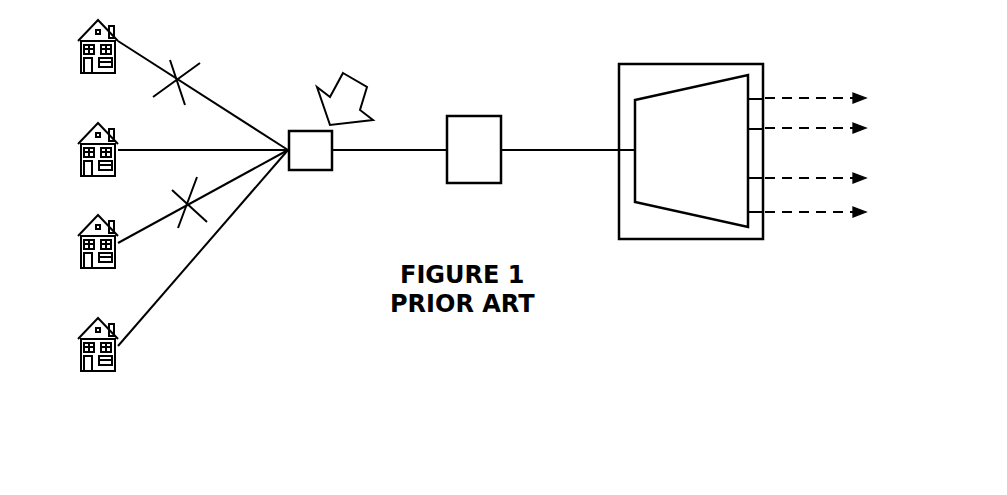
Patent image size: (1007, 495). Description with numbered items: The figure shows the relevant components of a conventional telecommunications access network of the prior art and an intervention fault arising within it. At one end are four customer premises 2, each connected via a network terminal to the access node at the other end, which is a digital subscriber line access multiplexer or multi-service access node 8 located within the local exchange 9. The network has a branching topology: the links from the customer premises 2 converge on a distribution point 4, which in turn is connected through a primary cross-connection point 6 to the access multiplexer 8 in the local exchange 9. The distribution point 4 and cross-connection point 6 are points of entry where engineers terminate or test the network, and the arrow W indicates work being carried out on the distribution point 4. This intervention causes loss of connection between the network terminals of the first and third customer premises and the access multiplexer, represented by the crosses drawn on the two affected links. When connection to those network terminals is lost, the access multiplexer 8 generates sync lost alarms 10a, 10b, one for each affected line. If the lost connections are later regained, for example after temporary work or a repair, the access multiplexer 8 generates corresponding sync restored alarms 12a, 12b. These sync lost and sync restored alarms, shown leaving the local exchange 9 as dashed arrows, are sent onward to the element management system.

The customer premises 2 is at (55, 364).
The distribution point 4 is at (310, 150).
The arrow indicating intervention work W is at (345, 99).
The primary cross-connection point 6 is at (474, 149).
The digital subscriber line access multiplexer 8 is at (691, 151).
The local exchange 9 is at (703, 243).
The sync lost alarm 10a is at (815, 89).
The sync lost alarm 10b is at (815, 117).
The sync restored alarm 12a is at (815, 168).
The sync restored alarm 12b is at (815, 202).